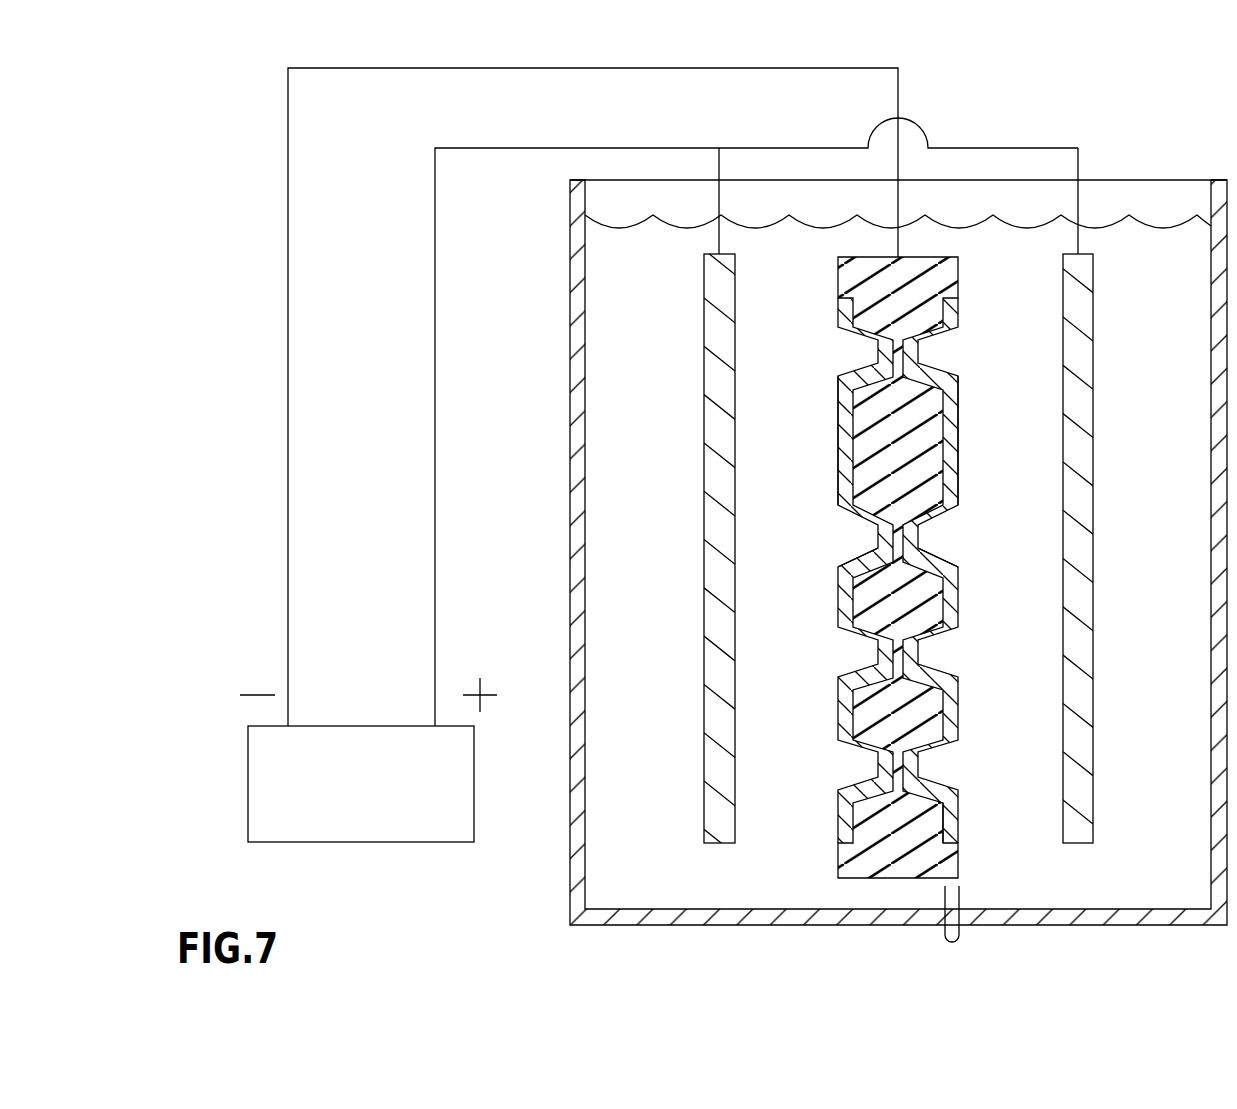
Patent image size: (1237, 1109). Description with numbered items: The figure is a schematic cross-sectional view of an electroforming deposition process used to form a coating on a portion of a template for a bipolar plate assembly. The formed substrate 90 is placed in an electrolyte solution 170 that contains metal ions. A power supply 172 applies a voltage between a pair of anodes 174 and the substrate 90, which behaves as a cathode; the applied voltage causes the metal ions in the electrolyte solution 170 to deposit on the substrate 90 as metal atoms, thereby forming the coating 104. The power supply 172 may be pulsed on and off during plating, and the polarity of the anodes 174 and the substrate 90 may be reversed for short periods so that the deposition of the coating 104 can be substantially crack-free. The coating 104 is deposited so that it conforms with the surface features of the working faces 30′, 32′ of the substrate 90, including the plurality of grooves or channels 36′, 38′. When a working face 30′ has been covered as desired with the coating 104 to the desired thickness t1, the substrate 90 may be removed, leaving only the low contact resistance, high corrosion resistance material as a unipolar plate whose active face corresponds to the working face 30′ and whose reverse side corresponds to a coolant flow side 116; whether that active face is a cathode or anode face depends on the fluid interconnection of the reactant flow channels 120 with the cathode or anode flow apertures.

The electrolyte solution 170 is at (1172, 335).
The power supply 172 is at (378, 793).
The anodes 174 is at (704, 549).
The reactant flow channels 120 is at (909, 622).
The coating 104 is at (959, 483).
The substrate 90 is at (900, 879).
The coolant flow side 116 is at (948, 821).
The working face 30′ is at (949, 425).
The working face 32′ is at (848, 430).
The grooves or channels 36′ is at (938, 558).
The grooves or channels 38′ is at (857, 558).
The thickness t1 is at (952, 942).